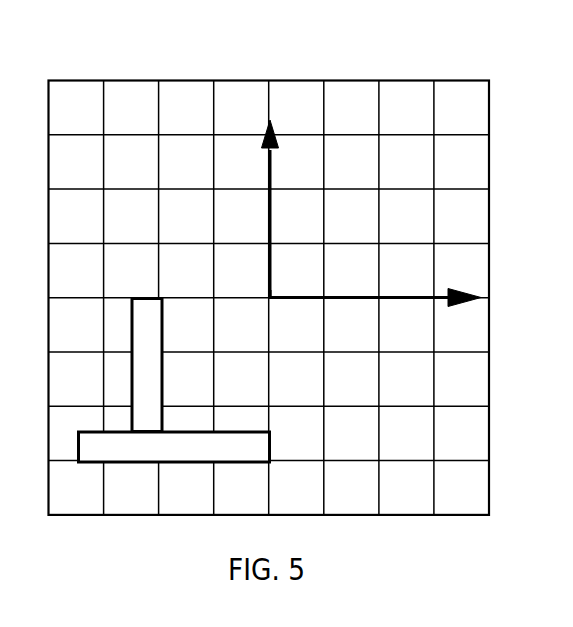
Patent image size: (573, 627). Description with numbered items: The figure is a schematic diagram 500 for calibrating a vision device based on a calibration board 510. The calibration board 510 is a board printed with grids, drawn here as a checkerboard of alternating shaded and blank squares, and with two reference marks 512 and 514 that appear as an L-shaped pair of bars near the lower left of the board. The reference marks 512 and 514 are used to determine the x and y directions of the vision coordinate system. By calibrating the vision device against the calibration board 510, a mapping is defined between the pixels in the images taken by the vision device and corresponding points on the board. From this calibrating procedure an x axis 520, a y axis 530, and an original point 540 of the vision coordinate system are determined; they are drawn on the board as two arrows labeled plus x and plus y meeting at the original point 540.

The schematic diagram 500 is at (184, 40).
The calibration board 510 is at (400, 80).
The reference mark 512 is at (236, 431).
The reference mark 514 is at (150, 298).
The x axis 520 is at (404, 297).
The y axis 530 is at (272, 203).
The original point 540 is at (272, 294).